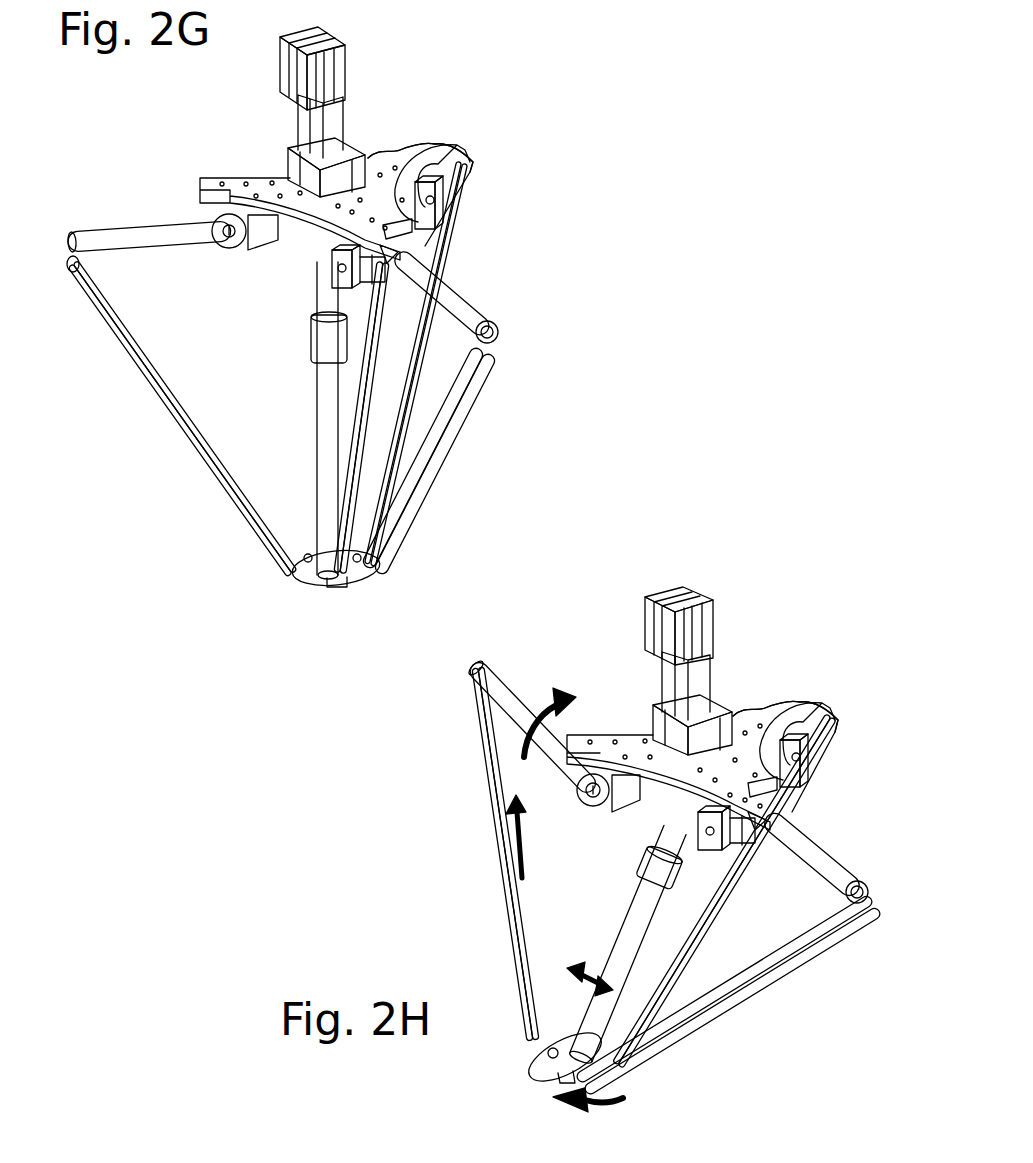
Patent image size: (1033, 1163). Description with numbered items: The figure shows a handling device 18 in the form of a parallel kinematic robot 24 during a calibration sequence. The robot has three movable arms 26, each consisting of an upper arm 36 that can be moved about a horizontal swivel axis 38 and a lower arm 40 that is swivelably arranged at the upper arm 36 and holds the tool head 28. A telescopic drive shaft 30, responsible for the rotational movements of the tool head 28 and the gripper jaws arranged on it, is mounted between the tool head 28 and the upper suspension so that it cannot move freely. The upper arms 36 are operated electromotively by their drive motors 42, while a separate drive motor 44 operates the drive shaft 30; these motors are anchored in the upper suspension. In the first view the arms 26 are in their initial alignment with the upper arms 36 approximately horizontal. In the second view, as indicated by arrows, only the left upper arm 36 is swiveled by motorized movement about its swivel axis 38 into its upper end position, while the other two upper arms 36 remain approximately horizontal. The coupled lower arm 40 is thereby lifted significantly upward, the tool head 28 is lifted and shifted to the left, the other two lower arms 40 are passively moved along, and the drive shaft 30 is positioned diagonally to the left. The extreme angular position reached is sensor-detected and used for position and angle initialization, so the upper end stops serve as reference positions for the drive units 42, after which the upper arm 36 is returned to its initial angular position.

In FIG. 2G, the handling device 18 is at (624, 141).
In FIG. 2H, the handling device 18 is at (355, 734).
In FIG. 2G, the parallel kinematic robot 24 is at (322, 336).
In FIG. 2H, the parallel kinematic robot 24 is at (665, 860).
In FIG. 2G, the movable arms 26 is at (474, 256).
In FIG. 2H, the movable arms 26 is at (816, 814).
In FIG. 2G, the tool head 28 is at (348, 590).
In FIG. 2H, the tool head 28 is at (560, 1081).
In FIG. 2G, the drive shaft 30 is at (326, 400).
In FIG. 2H, the drive shaft 30 is at (632, 946).
In FIG. 2G, the upper arms 36 is at (437, 155).
In FIG. 2H, the upper arms 36 is at (510, 699).
In FIG. 2G, the horizontal swivel axes 38 is at (330, 266).
In FIG. 2H, the horizontal swivel axes 38 is at (692, 820).
In FIG. 2G, the lower arms 40 is at (490, 400).
In FIG. 2H, the lower arms 40 is at (505, 843).
In FIG. 2G, the drive motors 42 is at (476, 163).
In FIG. 2H, the drive motors 42 is at (838, 732).
In FIG. 2G, the drive motor 44 is at (305, 117).
In FIG. 2H, the drive motor 44 is at (682, 667).